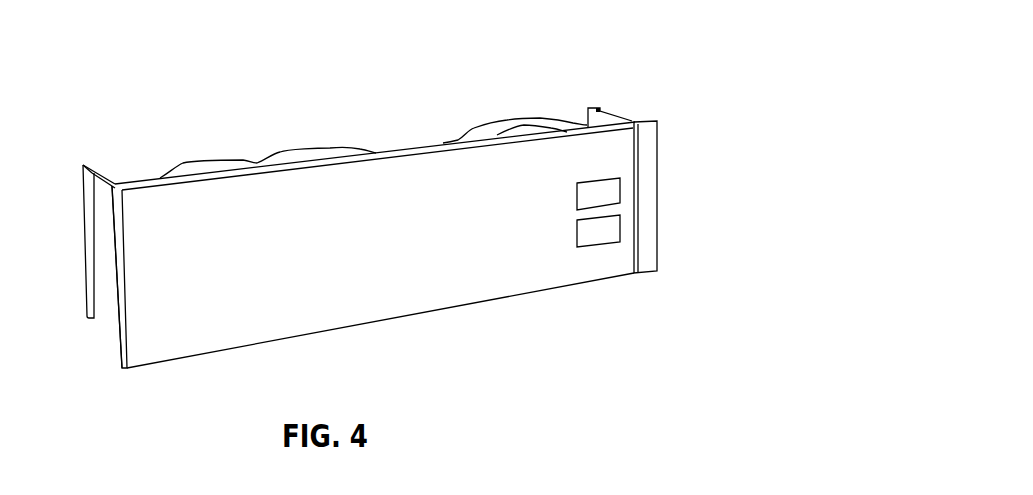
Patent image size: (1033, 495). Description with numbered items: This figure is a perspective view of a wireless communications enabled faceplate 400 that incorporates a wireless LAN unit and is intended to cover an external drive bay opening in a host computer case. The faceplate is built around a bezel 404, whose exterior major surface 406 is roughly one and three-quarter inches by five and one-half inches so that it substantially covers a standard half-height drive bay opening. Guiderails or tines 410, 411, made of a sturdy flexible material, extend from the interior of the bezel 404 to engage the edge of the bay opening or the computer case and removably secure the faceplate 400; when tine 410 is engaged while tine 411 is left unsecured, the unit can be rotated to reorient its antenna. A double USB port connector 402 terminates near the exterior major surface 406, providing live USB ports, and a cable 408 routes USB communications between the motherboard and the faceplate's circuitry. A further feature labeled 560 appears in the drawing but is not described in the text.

The faceplate 400 is at (583, 341).
The double USB port connector 402 is at (610, 187).
The bezel 404 is at (633, 255).
The exterior major surface 406 is at (315, 283).
The cable 408 is at (520, 118).
The tine 410 is at (606, 112).
The tine 411 is at (100, 260).
The panel edge 560 is at (119, 314).